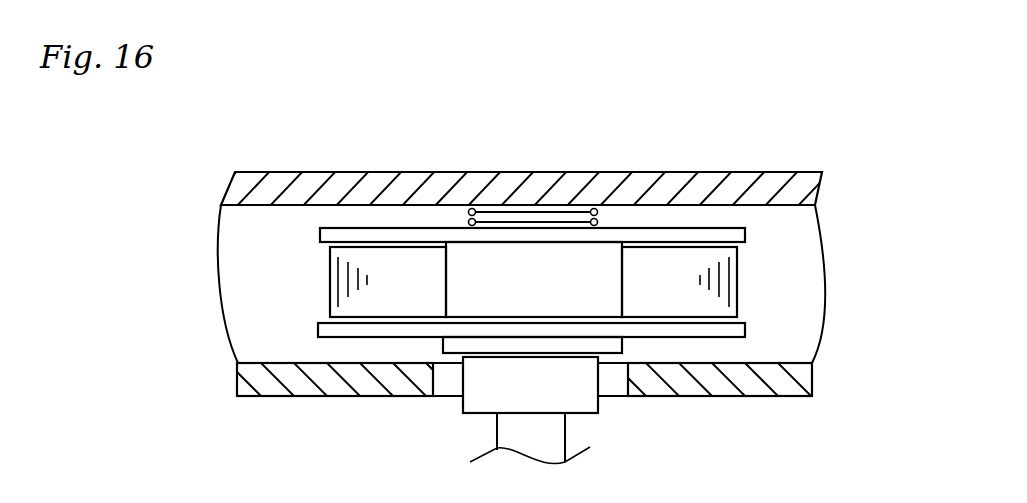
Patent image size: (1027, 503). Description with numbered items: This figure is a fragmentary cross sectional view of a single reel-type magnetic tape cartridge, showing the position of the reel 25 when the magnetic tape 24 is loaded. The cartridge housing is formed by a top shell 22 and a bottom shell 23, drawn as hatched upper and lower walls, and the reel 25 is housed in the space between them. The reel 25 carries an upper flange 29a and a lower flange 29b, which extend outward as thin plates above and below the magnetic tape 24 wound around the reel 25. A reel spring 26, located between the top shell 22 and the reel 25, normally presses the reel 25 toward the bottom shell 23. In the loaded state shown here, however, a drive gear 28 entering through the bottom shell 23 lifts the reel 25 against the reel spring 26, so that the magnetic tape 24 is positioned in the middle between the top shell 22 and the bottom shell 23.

The top shell 22 is at (763, 186).
The bottom shell 23 is at (742, 385).
The magnetic tape 24 is at (392, 297).
The reel 25 is at (602, 267).
The reel spring 26 is at (553, 207).
The drive gear 28 is at (587, 402).
The upper flange 29a is at (745, 235).
The lower flange 29b is at (745, 333).